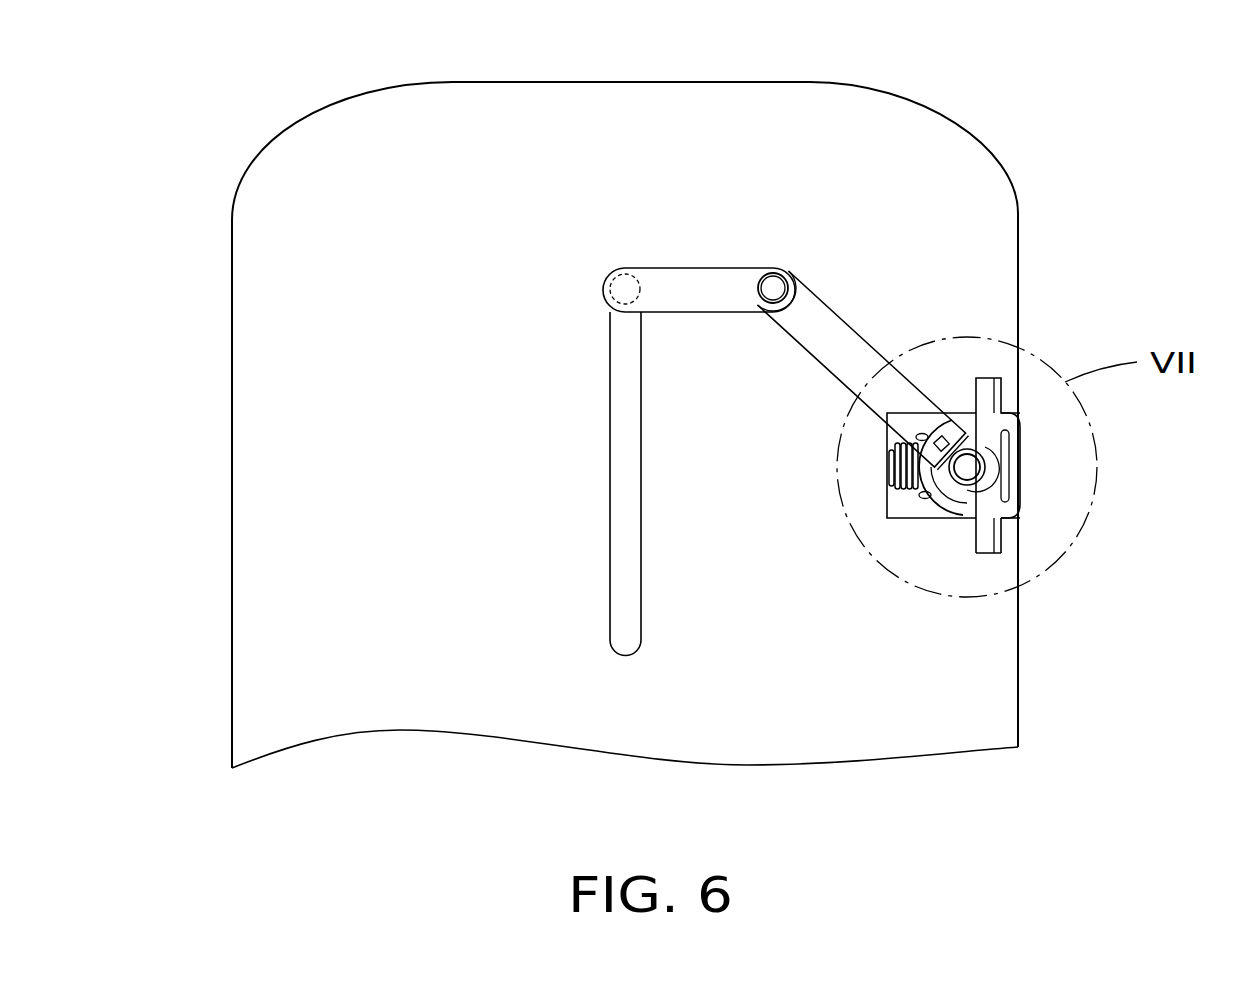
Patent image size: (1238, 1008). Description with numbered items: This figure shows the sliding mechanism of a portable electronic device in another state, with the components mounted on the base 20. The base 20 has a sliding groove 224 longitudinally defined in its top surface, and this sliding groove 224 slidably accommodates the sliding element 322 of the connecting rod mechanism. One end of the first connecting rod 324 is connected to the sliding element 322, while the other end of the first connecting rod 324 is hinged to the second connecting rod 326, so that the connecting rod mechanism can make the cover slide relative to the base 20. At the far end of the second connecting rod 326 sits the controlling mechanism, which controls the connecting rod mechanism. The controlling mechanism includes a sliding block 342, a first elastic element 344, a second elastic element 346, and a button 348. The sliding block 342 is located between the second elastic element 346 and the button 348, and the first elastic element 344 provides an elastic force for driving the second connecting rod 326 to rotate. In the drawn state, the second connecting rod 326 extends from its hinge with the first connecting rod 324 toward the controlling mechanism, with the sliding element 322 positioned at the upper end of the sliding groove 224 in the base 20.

The base 20 is at (303, 393).
The sliding groove 224 is at (625, 607).
The sliding element 322 is at (621, 283).
The first connecting rod 324 is at (708, 278).
The second connecting rod 326 is at (838, 347).
The sliding block 342 is at (940, 503).
The first elastic element 344 is at (985, 467).
The second elastic element 346 is at (901, 470).
The button 348 is at (1010, 425).